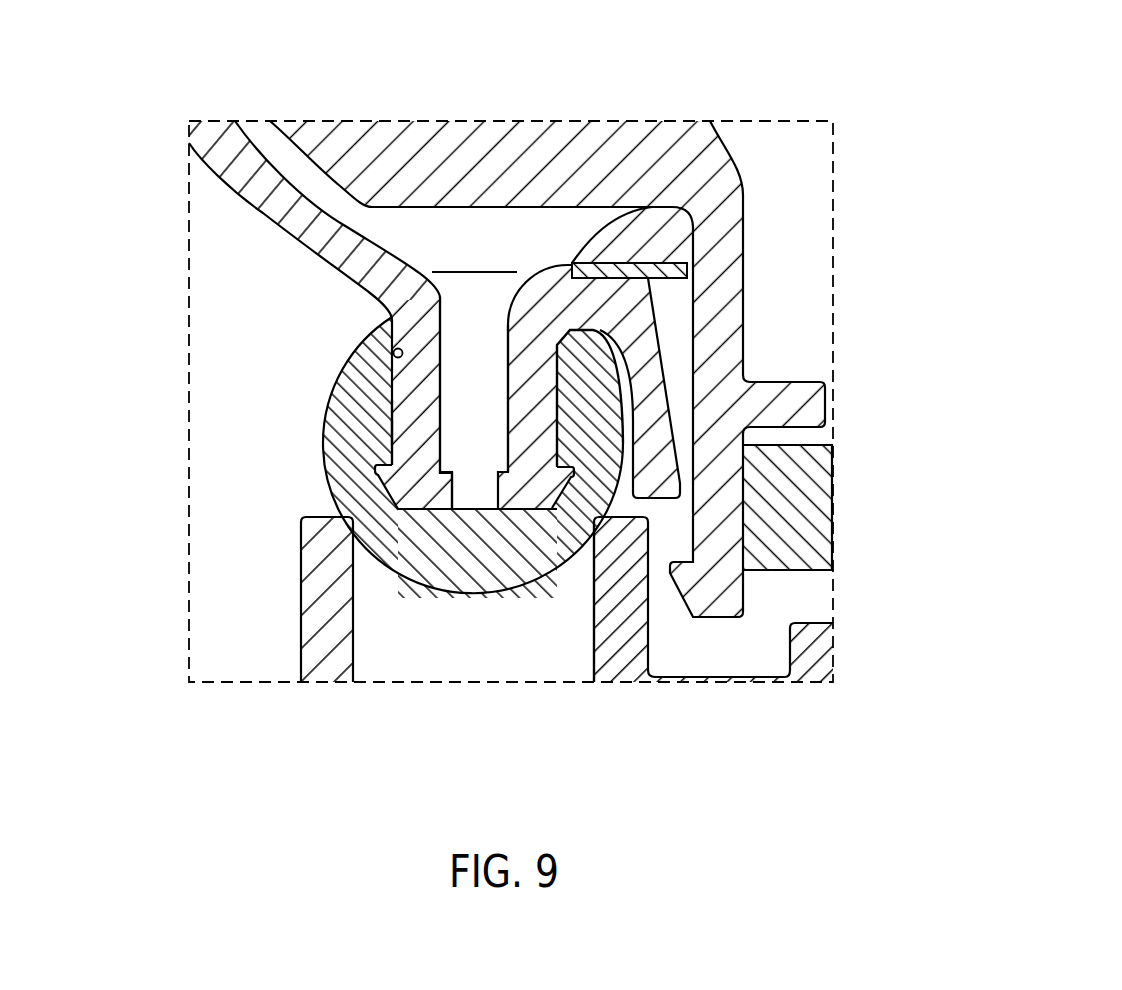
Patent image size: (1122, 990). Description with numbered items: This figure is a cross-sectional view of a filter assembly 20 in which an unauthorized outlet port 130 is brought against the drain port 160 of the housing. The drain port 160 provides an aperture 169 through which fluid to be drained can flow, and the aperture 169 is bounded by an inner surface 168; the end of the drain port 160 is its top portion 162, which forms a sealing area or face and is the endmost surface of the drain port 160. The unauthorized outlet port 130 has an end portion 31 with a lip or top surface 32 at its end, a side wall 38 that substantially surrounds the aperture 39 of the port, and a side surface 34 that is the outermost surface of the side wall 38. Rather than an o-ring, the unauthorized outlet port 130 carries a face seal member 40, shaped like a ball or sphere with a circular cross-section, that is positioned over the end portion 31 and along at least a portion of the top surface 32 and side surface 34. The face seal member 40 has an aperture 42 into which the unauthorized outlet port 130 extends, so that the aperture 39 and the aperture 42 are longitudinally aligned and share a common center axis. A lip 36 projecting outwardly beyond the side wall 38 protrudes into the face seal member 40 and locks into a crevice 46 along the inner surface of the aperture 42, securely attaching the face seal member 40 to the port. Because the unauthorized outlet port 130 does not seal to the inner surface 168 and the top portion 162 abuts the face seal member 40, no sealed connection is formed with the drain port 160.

The filter assembly 20 is at (697, 71).
The end portion 31 is at (558, 428).
The top surface 32 is at (393, 535).
The side surface 34 is at (397, 437).
The lip 36 is at (574, 480).
The side wall 38 is at (547, 372).
The aperture 39 is at (486, 326).
The face seal member 40 is at (343, 372).
The aperture 42 is at (397, 365).
The crevice 46 is at (382, 476).
The unauthorized outlet port 130 is at (380, 421).
The drain port 160 is at (596, 691).
The top portion 162 is at (636, 503).
The inner surface 168 is at (353, 640).
The aperture 169 is at (502, 665).